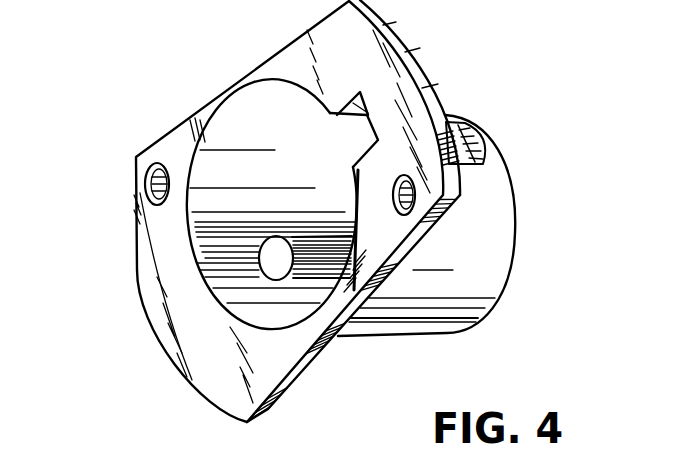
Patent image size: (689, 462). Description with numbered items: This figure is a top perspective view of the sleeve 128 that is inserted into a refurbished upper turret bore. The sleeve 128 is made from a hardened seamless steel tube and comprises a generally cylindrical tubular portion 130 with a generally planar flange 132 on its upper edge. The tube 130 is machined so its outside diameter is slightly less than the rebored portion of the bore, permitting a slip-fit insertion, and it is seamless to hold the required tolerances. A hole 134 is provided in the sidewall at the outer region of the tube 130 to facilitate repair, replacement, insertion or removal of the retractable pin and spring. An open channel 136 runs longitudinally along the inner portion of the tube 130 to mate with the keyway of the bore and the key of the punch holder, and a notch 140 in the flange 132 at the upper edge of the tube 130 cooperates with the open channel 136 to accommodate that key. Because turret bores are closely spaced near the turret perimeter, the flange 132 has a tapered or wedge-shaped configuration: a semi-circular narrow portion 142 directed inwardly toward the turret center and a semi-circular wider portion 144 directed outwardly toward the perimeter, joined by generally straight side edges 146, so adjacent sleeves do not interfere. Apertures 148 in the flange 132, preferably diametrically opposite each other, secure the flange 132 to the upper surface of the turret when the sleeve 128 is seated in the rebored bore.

The sleeve 128 is at (557, 160).
The cylindrical tubular portion 130 is at (425, 312).
The flange 132 is at (150, 295).
The hole 134 is at (283, 238).
The open channel 136 is at (470, 134).
The notch 140 is at (366, 108).
The narrow portion 142 is at (410, 55).
The wider portion 144 is at (137, 280).
The side edges 146 is at (240, 81).
The apertures 148 is at (145, 190).